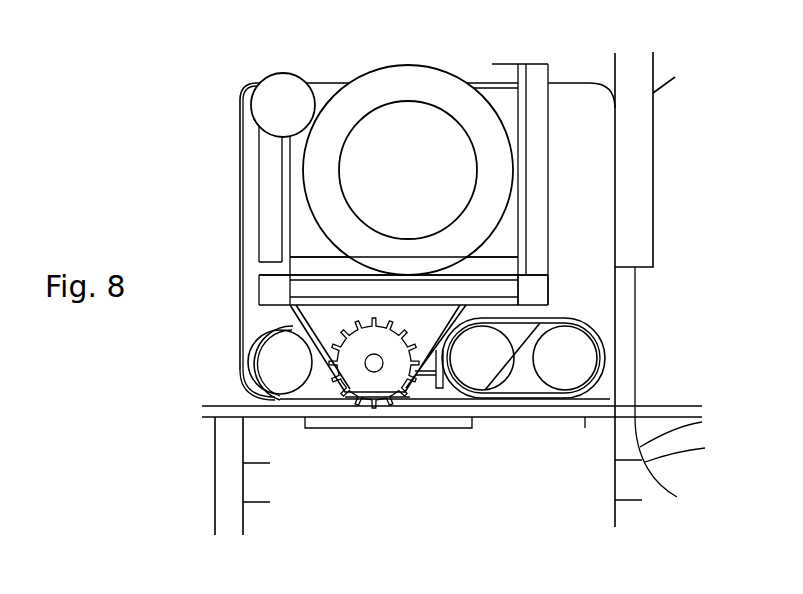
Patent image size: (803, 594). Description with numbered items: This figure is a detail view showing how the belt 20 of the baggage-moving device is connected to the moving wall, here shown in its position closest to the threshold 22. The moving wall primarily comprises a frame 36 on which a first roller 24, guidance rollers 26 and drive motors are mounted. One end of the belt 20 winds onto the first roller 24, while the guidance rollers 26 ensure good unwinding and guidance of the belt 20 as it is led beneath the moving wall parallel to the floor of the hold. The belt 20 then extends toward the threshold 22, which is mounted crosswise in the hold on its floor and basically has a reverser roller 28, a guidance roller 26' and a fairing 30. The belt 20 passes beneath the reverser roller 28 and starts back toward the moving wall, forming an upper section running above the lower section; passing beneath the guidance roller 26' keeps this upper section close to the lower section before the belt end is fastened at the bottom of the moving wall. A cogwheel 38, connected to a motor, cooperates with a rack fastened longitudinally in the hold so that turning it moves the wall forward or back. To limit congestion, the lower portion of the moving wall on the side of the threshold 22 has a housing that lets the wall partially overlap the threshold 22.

The belt 20 is at (243, 382).
The threshold 22 is at (567, 296).
The first roller 24 is at (403, 117).
The guidance rollers 26 is at (259, 209).
The guidance roller 26' is at (484, 387).
The reverser roller 28 is at (565, 387).
The fairing 30 is at (600, 320).
The frame 36 is at (637, 150).
The cogwheel 38 is at (393, 378).